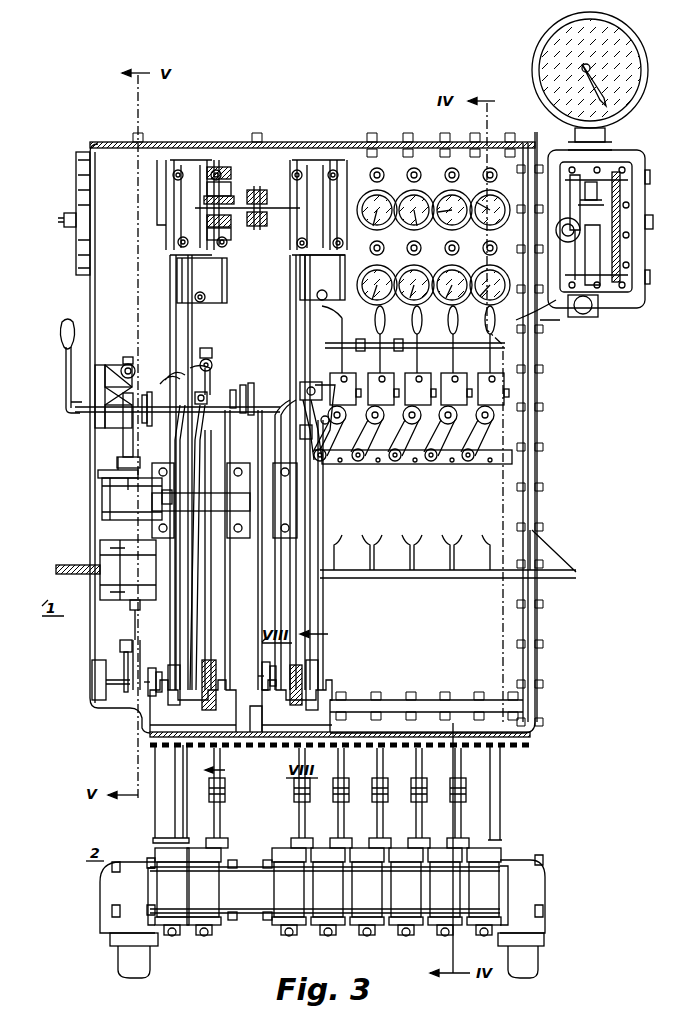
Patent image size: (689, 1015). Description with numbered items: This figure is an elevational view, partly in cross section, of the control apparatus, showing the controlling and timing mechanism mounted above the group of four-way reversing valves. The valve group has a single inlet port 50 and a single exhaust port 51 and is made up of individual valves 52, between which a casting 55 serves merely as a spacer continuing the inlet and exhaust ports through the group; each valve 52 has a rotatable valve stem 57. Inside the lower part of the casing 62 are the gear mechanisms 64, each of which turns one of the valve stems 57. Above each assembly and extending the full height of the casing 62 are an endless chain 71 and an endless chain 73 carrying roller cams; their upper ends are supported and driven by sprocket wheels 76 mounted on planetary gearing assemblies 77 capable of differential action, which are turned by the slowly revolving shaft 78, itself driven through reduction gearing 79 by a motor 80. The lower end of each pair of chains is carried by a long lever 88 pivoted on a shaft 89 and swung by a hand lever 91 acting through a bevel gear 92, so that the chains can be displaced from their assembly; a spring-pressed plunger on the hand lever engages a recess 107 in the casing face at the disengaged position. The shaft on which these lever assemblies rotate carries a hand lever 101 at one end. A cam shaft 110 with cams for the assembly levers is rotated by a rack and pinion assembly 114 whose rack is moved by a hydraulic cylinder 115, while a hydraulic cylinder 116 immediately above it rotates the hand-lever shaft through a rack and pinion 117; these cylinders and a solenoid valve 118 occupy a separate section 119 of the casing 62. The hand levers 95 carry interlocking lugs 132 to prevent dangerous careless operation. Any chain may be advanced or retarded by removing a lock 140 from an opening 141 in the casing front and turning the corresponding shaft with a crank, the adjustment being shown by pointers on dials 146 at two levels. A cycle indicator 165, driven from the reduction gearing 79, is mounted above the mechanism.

The inlet port 50 is at (118, 932).
The exhaust port 51 is at (553, 926).
The valve 52 is at (205, 928).
The casting 55 is at (256, 904).
The valve stem 57 is at (296, 816).
The casing 62 is at (148, 145).
The standard gear mechanism 64 is at (150, 736).
The endless chain 71 is at (170, 320).
The endless chain 73 is at (188, 350).
The sprocket wheel 76 is at (198, 171).
The planetary gearing assembly 77 is at (228, 182).
The shaft 78 is at (250, 216).
The reduction gearing 79 is at (610, 247).
The motor 80 is at (622, 220).
The lever 88 is at (210, 393).
The shaft 89 is at (205, 510).
The hand lever 91 is at (362, 460).
The bevel gear 92 is at (290, 431).
The hand lever 95 is at (335, 363).
The hand lever 101 is at (90, 381).
The recess 107 is at (210, 400).
The cam shaft 110 is at (148, 695).
The rack and pinion assembly 114 is at (110, 663).
The hydraulic cylinder 115 is at (116, 546).
The hydraulic cylinder 116 is at (102, 503).
The rack and pinion 117 is at (105, 442).
The solenoid valve 118 is at (177, 282).
The separate section 119 is at (108, 132).
The interlocking lug 132 is at (395, 344).
The lock 140 is at (400, 164).
The opening 141 is at (452, 166).
The dial 146 is at (530, 312).
The cycle indicator 165 is at (545, 66).